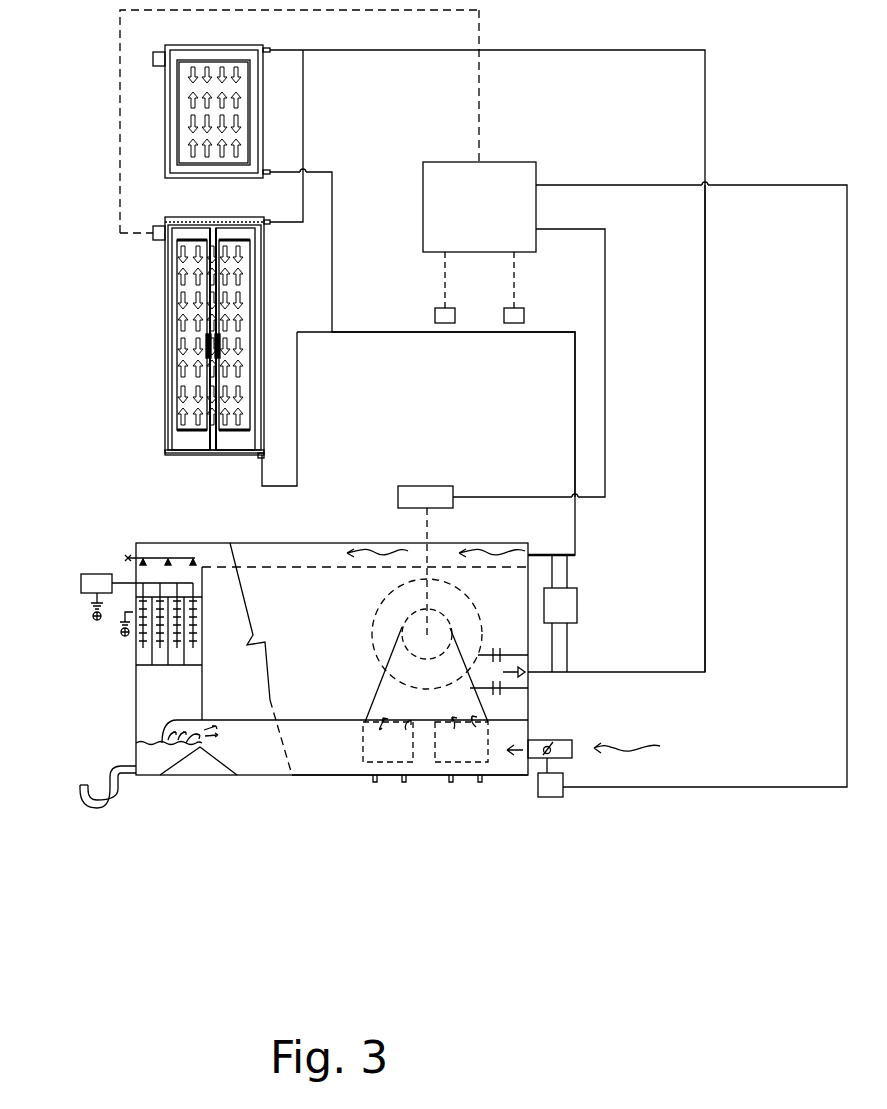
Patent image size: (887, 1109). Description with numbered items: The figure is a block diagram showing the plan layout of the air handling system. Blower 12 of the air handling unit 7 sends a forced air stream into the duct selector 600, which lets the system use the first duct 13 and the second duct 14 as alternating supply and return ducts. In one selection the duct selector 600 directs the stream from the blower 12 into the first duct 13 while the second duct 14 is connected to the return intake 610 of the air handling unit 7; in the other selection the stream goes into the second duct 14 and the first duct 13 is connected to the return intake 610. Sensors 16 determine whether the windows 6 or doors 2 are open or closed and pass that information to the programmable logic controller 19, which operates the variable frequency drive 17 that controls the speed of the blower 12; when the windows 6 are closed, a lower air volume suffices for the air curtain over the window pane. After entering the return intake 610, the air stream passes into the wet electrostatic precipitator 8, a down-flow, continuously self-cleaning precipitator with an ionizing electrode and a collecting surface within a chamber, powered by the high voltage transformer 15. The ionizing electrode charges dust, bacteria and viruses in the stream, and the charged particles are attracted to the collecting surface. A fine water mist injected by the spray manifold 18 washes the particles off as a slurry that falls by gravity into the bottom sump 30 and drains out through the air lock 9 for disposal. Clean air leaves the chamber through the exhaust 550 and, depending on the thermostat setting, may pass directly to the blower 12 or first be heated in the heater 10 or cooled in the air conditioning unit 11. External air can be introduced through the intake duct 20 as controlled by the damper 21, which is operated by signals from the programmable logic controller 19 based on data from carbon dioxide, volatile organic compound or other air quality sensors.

The doors 2 is at (165, 316).
The windows 6 is at (265, 107).
The air handling unit 7 is at (332, 662).
The wet electrostatic precipitator 8 is at (143, 654).
The air lock 9 is at (80, 787).
The heater 10 is at (388, 740).
The air conditioning unit 11 is at (461, 739).
The blower 12 is at (446, 650).
The first duct 13 is at (705, 455).
The second duct 14 is at (575, 389).
The high voltage transformer 15 is at (137, 605).
The sensors 16 is at (152, 230).
The variable frequency drive 17 is at (415, 487).
The spray manifold 18 is at (128, 558).
The programmable logic controller 19 is at (479, 207).
The intake duct 20 is at (562, 742).
The damper 21 is at (548, 789).
The bottom sump 30 is at (157, 765).
The exhaust 550 is at (313, 752).
The duct selector 600 is at (560, 613).
The return intake 610 is at (528, 548).